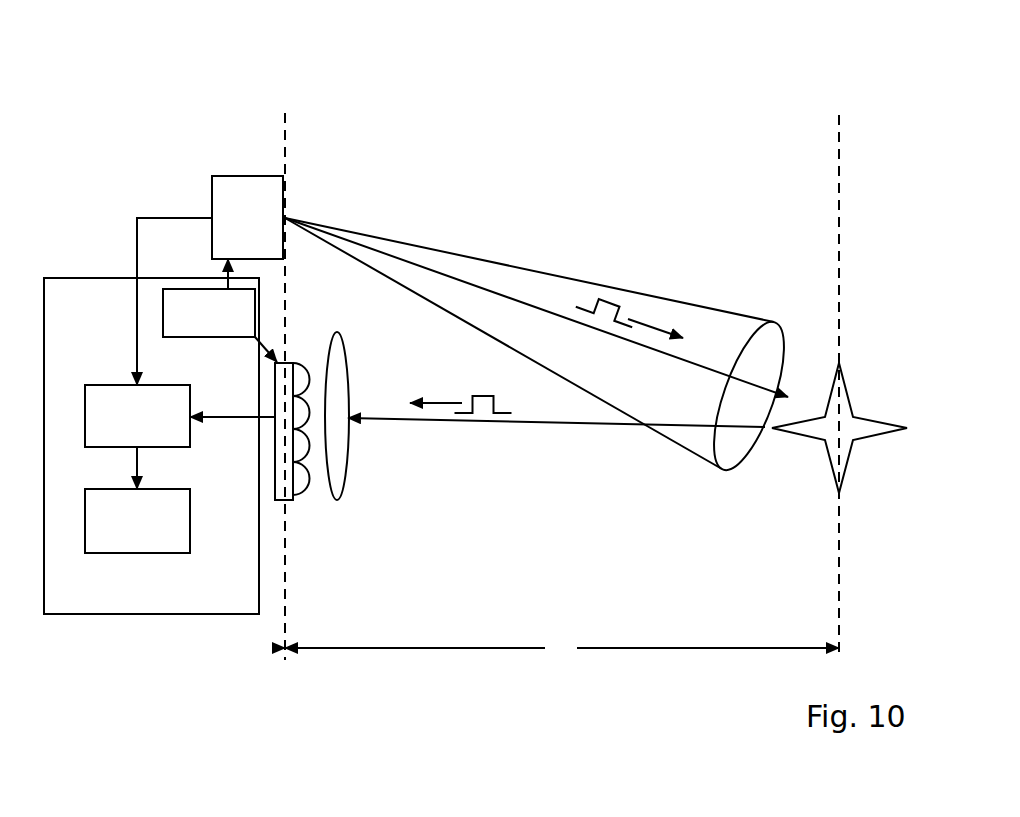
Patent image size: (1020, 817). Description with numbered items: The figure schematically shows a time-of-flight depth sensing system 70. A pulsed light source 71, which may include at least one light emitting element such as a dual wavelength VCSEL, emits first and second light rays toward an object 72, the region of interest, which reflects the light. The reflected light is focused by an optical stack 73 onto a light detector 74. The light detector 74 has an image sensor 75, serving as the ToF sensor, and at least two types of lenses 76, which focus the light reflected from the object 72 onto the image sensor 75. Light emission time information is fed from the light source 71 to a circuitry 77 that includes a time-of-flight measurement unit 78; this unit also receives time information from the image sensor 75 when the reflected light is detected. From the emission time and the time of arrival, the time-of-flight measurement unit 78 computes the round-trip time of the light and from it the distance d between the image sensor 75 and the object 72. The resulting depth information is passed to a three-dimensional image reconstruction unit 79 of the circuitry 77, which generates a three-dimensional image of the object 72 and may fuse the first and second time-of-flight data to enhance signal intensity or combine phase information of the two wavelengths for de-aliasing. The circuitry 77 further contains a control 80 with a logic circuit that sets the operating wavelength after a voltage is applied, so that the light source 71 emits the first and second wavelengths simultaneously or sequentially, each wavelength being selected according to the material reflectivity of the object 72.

The time-of-flight depth sensing system 70 is at (348, 78).
The pulsed light source 71 is at (505, 327).
The object 72 is at (883, 455).
The optical stack 73 is at (350, 453).
The light detector 74 is at (320, 518).
The image sensor 75 is at (275, 503).
The lenses 76 is at (300, 362).
The circuitry 77 is at (73, 278).
The time-of-flight measurement unit 78 is at (137, 416).
The 3D image reconstruction unit 79 is at (137, 521).
The control 80 is at (209, 313).